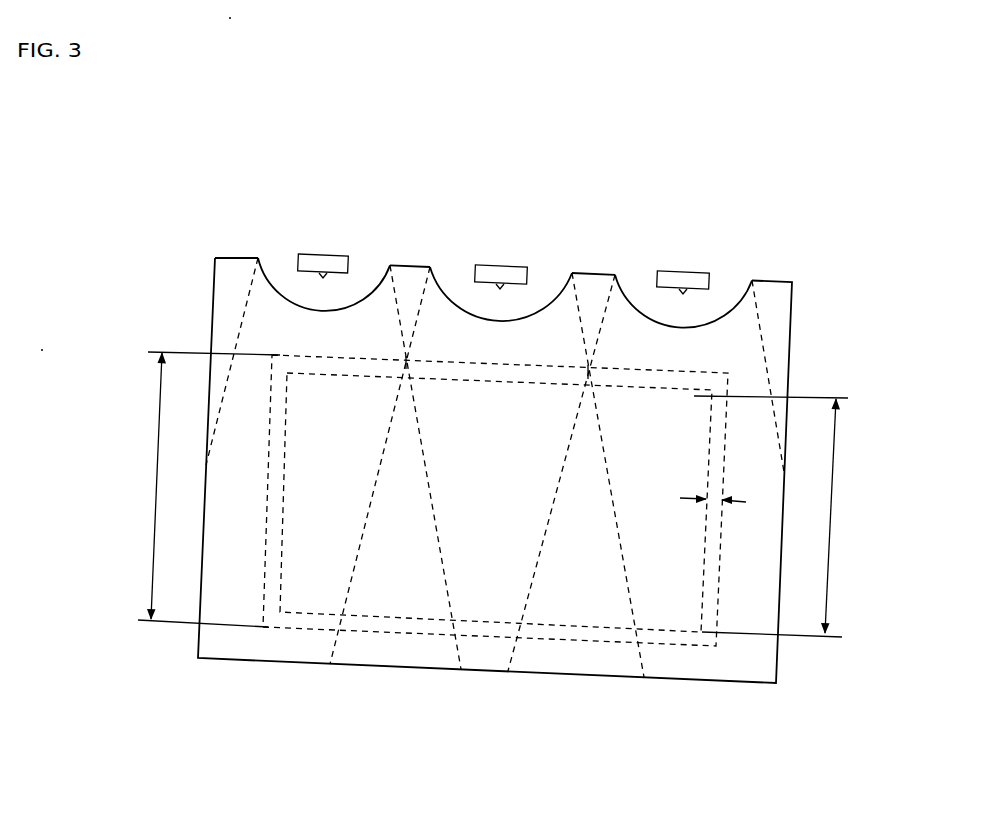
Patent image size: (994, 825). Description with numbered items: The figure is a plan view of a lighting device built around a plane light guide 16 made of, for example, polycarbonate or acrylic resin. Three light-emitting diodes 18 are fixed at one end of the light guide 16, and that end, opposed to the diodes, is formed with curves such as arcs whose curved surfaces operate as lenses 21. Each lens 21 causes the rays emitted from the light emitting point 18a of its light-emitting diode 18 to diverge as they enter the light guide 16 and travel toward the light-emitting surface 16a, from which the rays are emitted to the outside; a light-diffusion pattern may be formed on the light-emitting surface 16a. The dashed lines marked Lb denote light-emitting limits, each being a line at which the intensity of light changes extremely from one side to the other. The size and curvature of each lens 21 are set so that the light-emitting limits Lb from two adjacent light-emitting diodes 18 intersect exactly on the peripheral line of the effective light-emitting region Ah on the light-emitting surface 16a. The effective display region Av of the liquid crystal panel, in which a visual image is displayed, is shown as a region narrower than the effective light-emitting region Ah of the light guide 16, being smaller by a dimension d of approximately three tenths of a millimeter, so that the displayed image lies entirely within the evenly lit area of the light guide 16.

The light guide 16 is at (812, 297).
The light-emitting surface 16a is at (758, 428).
The light-emitting diode 18 is at (330, 254).
The light emitting point 18a is at (323, 278).
The lens 21 is at (266, 272).
The light-emitting limit Lb is at (360, 537).
The dimension d is at (713, 489).
The effective light-emitting region Ah is at (194, 473).
The effective display region Av is at (584, 527).